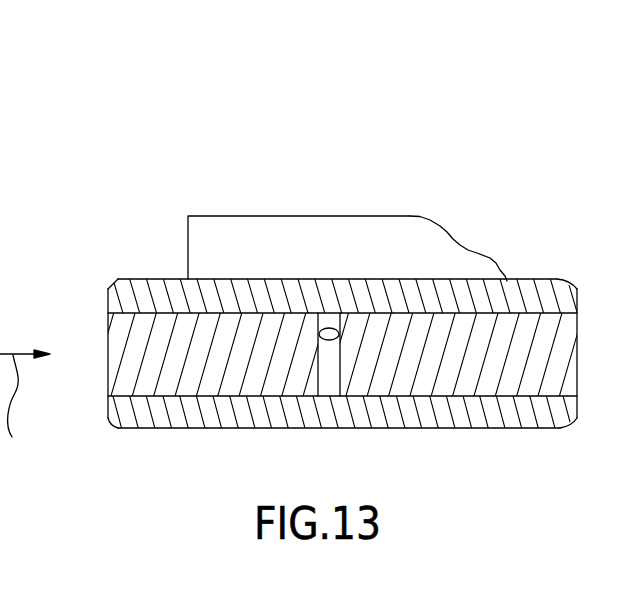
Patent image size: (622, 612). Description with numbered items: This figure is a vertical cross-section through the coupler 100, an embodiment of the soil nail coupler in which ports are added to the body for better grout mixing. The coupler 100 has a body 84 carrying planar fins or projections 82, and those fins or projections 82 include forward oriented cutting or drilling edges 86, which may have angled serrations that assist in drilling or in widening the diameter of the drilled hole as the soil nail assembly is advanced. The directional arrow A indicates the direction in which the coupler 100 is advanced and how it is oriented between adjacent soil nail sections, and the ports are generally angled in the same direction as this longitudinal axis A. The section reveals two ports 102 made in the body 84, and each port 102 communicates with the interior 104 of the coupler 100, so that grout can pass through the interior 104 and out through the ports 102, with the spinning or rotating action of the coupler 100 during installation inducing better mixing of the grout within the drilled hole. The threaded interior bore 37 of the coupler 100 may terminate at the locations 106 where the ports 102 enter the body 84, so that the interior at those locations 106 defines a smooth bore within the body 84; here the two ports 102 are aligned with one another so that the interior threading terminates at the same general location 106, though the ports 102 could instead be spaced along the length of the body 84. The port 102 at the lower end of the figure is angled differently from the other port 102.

The coupler 100 is at (408, 100).
The threaded interior bore 37 is at (98, 335).
The fins or projections 82 is at (248, 233).
The body 84 is at (143, 278).
The cutting or drilling edges 86 is at (490, 257).
The ports 102 is at (328, 328).
The interior 104 is at (403, 312).
The location(s) 106 is at (321, 397).
The directional arrow / longitudinal axis A is at (25, 410).